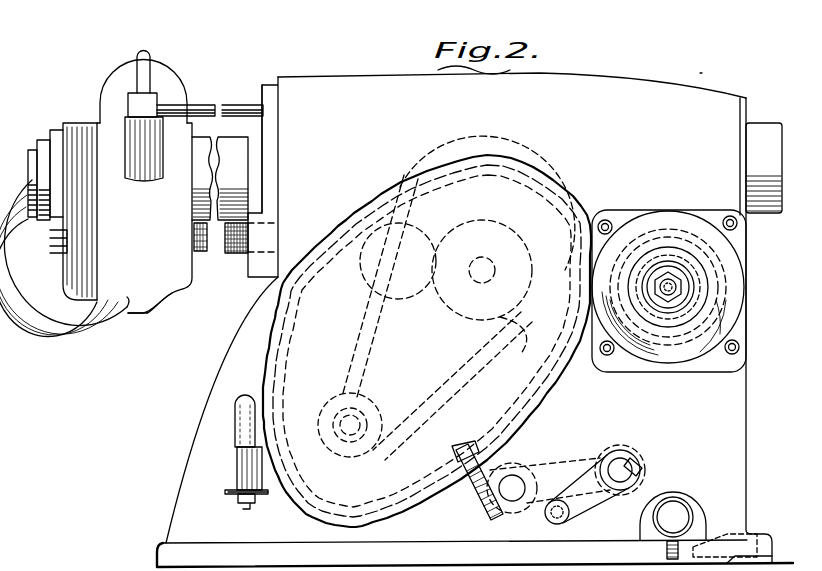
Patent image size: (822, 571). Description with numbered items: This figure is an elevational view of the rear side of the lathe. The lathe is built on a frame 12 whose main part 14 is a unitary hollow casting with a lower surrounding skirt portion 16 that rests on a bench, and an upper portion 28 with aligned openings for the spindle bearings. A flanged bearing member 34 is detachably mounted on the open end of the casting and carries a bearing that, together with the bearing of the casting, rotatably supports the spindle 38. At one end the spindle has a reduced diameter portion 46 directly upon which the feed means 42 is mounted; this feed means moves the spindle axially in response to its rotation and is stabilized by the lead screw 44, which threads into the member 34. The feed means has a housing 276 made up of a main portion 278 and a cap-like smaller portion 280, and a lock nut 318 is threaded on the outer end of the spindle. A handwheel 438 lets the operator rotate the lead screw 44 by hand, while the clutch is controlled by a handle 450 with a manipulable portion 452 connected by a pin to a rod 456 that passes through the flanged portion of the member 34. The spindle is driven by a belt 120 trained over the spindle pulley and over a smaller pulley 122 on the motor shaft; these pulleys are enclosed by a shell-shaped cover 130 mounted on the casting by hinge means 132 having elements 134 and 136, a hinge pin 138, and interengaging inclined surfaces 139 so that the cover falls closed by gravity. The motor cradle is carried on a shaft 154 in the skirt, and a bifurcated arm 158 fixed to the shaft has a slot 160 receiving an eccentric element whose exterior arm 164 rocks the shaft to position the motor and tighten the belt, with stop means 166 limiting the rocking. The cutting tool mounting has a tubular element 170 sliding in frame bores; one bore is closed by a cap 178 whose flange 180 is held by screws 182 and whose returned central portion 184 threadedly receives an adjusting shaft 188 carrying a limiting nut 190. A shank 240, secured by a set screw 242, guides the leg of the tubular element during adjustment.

The frame 12 is at (730, 63).
The main part 14 is at (647, 73).
The skirt portion 16 is at (740, 463).
The portion 28 is at (573, 97).
The flanged bearing member 34 is at (272, 123).
The spindle 38 is at (763, 130).
The feed means 42 is at (84, 93).
The lead screw 44 is at (240, 252).
The reduced diameter portion 46 is at (28, 170).
The belt 120 is at (420, 413).
The pulley 122 is at (357, 395).
The cover 130 is at (314, 330).
The hinge means 132 is at (208, 467).
The hinge element 134 is at (235, 420).
The hinge element 136 is at (230, 473).
The hinge pin 138 is at (243, 507).
The inclined surfaces 139 is at (237, 432).
The shaft 154 is at (512, 490).
The bifurcated arm 158 is at (567, 467).
The slot 160 is at (640, 493).
The exterior arm 164 is at (587, 503).
The stop means 166 is at (513, 457).
The tubular element 170 is at (720, 265).
The cap 178 is at (733, 317).
The flange 180 is at (737, 333).
The screws 182 is at (732, 354).
The central portion 184 is at (697, 287).
The adjusting shaft 188 is at (663, 283).
The nut 190 is at (687, 277).
The shank 240 is at (680, 513).
The set screw 242 is at (693, 547).
The housing 276 is at (140, 319).
The main portion 278 is at (155, 307).
The cap-like smaller portion 280 is at (90, 287).
The lock nut 318 is at (40, 142).
The handwheel 438 is at (52, 307).
The handle 450 is at (155, 92).
The manipulable portion 452 is at (143, 68).
The rod 456 is at (190, 105).